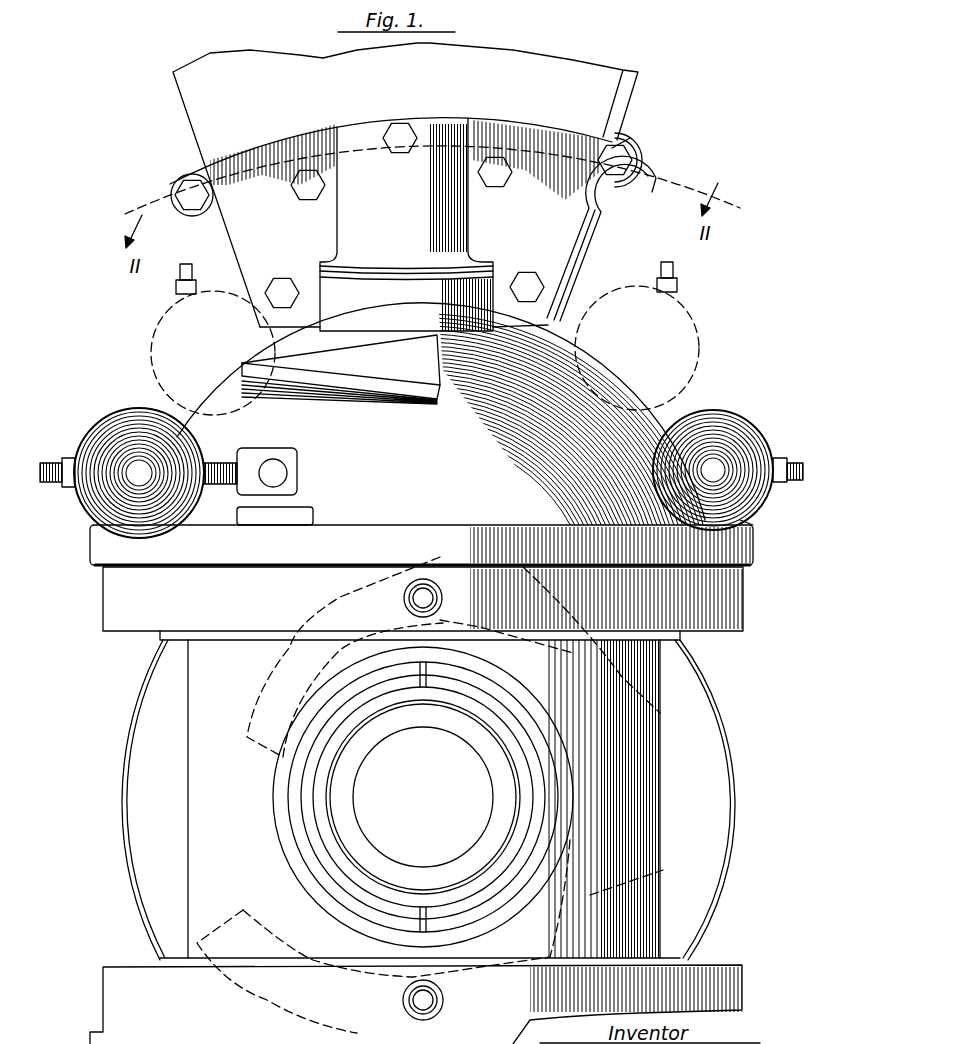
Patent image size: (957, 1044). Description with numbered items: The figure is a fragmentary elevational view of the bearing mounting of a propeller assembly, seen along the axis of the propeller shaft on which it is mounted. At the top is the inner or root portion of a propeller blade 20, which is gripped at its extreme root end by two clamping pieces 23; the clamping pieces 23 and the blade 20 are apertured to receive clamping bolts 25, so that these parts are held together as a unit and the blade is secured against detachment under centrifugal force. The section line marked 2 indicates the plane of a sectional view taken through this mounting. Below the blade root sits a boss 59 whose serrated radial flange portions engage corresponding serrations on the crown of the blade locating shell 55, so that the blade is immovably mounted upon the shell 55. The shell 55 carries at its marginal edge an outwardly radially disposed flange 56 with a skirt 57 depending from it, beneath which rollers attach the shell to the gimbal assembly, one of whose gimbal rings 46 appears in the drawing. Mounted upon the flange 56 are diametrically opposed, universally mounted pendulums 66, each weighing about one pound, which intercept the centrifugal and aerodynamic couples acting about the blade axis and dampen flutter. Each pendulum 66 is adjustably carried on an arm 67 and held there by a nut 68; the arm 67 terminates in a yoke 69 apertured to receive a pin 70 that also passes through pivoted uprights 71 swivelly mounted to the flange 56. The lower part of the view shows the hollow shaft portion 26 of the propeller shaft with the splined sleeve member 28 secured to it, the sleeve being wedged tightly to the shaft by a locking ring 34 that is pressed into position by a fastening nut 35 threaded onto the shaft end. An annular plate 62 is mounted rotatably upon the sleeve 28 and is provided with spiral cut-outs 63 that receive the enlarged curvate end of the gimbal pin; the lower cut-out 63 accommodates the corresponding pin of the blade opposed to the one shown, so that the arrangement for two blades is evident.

The propeller blade 20 is at (568, 76).
The flange section line reference 2 is at (626, 135).
The clamping bolts 25 is at (190, 180).
The clamping pieces 23 is at (580, 262).
The boss 59 is at (438, 352).
The blade locating shell 55 is at (632, 418).
The pendulums 66 is at (700, 320).
The arms 67 is at (50, 462).
The nuts 68 is at (70, 456).
The yokes 69 is at (290, 470).
The pin 70 is at (275, 470).
The pivoted uprights 71 is at (300, 508).
The skirt 57 is at (755, 556).
The flange 56 is at (743, 506).
The gimbal ring 46 is at (740, 601).
The annular plate 62 is at (688, 696).
The sleeve member 28 is at (290, 843).
The locking ring 34 is at (315, 850).
The fastening nut 35 is at (340, 740).
The hollow shaft portion 26 is at (452, 727).
The spiral cut-outs 63 is at (660, 713).